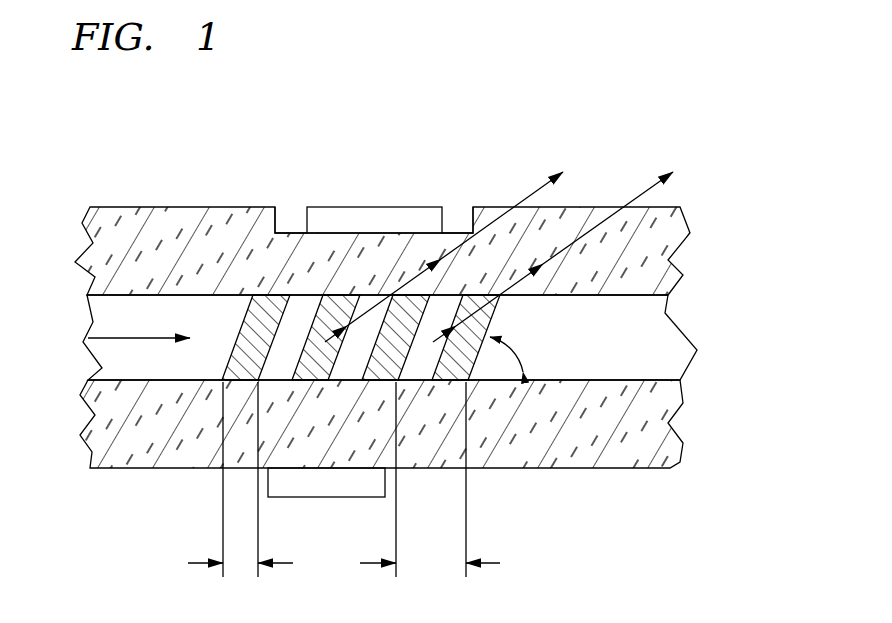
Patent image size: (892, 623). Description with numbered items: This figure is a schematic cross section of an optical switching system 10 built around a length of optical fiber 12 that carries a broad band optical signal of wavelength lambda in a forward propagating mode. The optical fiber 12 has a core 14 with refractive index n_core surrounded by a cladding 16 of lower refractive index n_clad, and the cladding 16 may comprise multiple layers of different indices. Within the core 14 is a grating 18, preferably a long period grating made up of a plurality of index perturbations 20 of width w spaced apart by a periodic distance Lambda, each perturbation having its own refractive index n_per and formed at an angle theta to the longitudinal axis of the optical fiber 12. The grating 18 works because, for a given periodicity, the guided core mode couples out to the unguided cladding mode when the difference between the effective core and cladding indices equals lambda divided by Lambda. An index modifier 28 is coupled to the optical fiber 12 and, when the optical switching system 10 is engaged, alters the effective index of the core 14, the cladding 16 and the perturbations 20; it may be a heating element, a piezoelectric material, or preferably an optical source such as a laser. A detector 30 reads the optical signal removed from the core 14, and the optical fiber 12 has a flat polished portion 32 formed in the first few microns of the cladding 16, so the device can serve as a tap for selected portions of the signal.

The optical switching system 10 is at (483, 118).
The optical fiber 12 is at (158, 198).
The core 14 is at (668, 336).
The cladding 16 is at (145, 468).
The grating 18 is at (268, 297).
The index perturbations 20 is at (468, 381).
The index modifier 28 is at (321, 499).
The detector 30 is at (362, 206).
The flat polished portion 32 is at (289, 207).